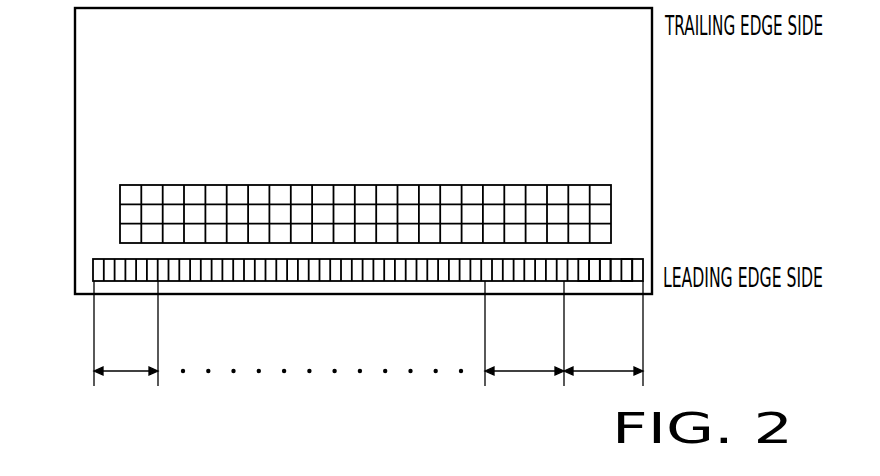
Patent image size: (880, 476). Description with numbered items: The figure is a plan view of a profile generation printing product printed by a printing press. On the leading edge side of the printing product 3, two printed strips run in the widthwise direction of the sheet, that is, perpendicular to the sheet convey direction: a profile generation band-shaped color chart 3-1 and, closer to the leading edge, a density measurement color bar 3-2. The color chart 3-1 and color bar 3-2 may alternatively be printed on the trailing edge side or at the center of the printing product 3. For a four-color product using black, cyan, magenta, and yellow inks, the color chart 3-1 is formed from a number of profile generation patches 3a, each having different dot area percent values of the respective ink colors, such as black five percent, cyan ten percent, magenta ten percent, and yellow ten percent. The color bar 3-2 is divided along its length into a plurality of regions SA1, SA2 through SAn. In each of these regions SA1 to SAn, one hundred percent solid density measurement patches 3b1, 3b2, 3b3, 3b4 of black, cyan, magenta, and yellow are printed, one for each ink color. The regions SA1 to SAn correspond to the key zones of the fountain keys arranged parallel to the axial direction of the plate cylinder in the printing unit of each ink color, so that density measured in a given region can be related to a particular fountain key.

The printing product 3 is at (75, 96).
The profile generation band-shaped color chart 3-1 is at (381, 185).
The profile generation patches 3a is at (342, 192).
The density measurement color bar 3-2 is at (346, 282).
The density measurement patch 3b1 is at (623, 275).
The density measurement patch 3b2 is at (610, 275).
The density measurement patch 3b3 is at (594, 275).
The density measurement patch 3b4 is at (585, 275).
The region SA1 is at (603, 333).
The region SA2 is at (524, 333).
The region SAn is at (126, 333).